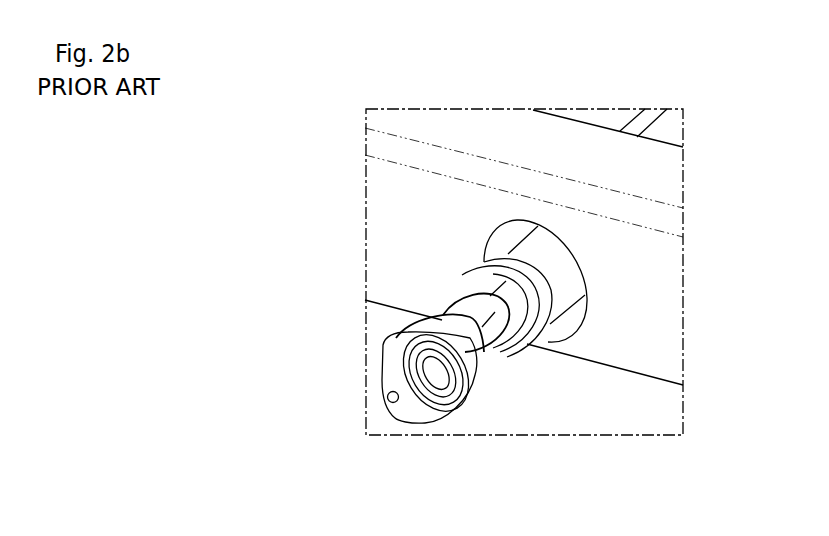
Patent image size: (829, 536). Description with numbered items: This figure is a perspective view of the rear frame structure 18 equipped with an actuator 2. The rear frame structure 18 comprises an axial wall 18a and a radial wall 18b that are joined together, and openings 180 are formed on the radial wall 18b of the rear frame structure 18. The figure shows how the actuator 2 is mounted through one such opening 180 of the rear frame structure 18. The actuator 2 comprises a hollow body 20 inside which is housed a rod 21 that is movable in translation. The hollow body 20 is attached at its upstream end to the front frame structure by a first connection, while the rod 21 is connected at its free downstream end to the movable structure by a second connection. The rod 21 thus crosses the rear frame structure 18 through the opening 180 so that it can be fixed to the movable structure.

The rear frame structure 18 is at (415, 107).
The axial wall 18a is at (527, 152).
The radial wall 18b is at (385, 188).
The hollow body 20 is at (674, 126).
The opening 180 is at (508, 238).
The rod 21 is at (497, 338).
The actuator 2 is at (572, 395).